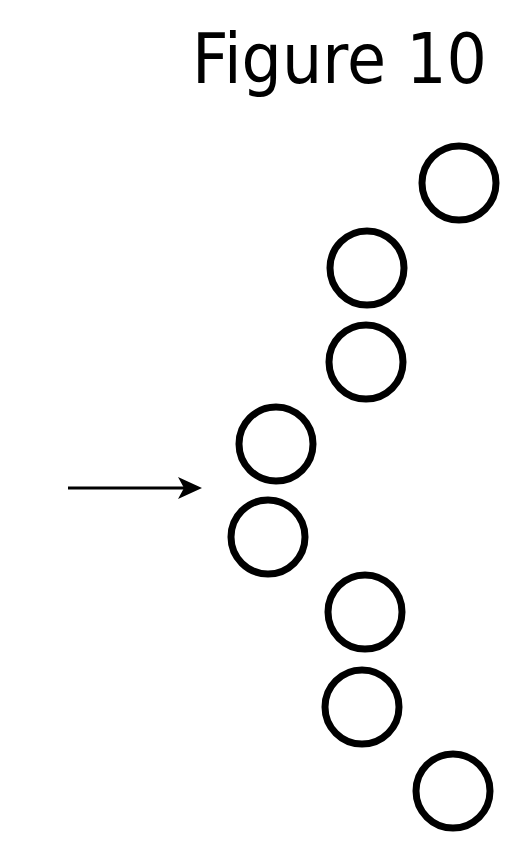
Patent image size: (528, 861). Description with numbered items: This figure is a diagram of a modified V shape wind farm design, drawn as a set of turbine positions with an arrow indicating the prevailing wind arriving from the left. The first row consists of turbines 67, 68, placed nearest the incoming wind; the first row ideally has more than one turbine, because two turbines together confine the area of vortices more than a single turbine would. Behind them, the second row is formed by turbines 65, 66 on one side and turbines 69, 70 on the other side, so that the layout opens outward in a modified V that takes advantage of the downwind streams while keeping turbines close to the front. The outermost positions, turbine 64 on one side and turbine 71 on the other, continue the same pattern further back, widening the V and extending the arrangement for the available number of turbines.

The turbine 64 is at (459, 183).
The turbine 65 is at (367, 268).
The turbine 66 is at (366, 362).
The turbine 67 is at (276, 444).
The turbine 68 is at (268, 537).
The turbine 69 is at (365, 612).
The turbine 70 is at (362, 707).
The turbine 71 is at (453, 791).